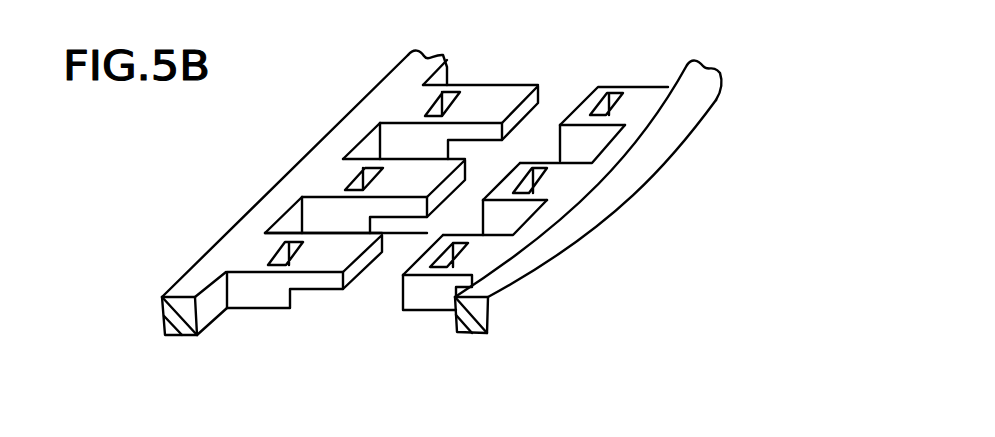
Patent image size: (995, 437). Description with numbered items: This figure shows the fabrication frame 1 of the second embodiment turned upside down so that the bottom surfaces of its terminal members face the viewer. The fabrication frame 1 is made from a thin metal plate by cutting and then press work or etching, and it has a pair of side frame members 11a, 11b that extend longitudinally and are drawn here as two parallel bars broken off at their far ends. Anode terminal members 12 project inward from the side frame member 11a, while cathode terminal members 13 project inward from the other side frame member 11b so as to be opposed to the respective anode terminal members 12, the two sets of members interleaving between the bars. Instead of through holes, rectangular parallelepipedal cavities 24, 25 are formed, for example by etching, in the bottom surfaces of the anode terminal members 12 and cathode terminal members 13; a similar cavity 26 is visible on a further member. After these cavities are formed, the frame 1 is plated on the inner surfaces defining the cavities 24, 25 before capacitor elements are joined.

The fabrication frame 1 is at (633, 199).
The side frame member 11a is at (615, 102).
The side frame member 11b is at (350, 174).
The anode terminal member 12 is at (504, 315).
The cathode terminal member 13 is at (291, 318).
The cavity 24 is at (443, 260).
The cavity 25 is at (278, 255).
The hole in upper tab 26 is at (455, 95).